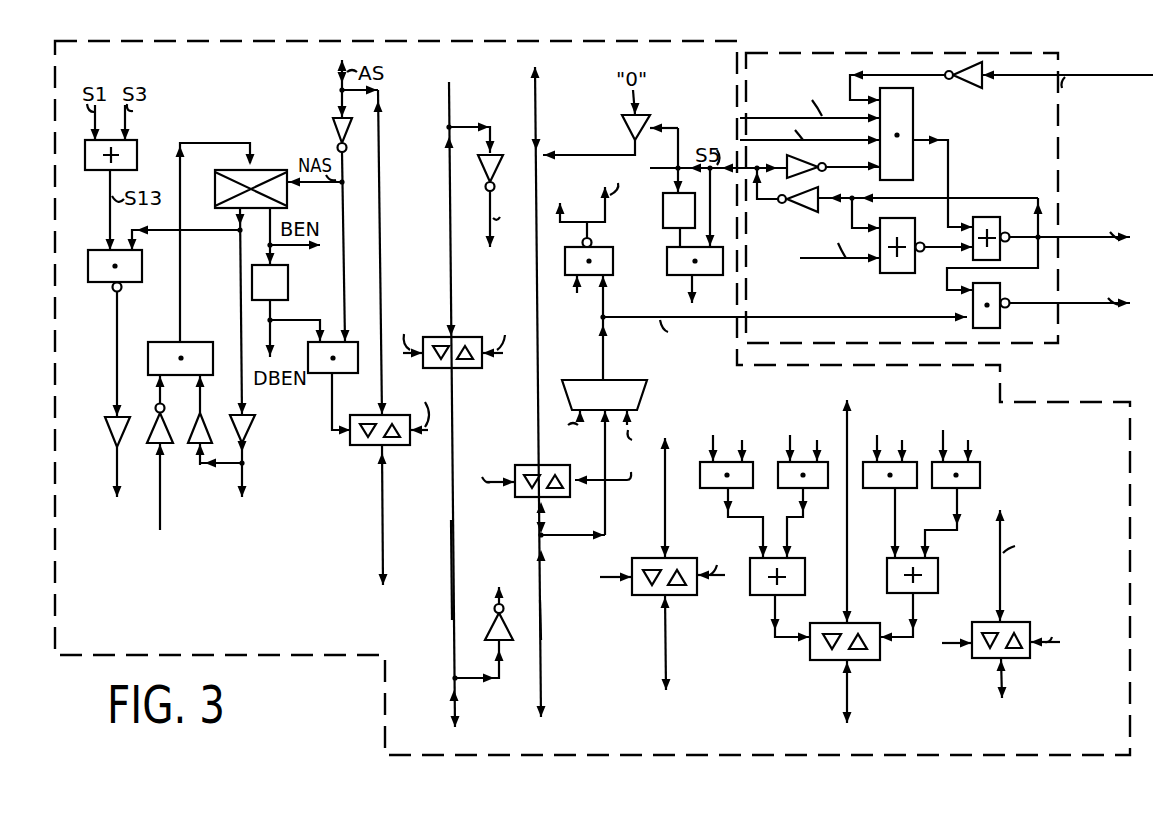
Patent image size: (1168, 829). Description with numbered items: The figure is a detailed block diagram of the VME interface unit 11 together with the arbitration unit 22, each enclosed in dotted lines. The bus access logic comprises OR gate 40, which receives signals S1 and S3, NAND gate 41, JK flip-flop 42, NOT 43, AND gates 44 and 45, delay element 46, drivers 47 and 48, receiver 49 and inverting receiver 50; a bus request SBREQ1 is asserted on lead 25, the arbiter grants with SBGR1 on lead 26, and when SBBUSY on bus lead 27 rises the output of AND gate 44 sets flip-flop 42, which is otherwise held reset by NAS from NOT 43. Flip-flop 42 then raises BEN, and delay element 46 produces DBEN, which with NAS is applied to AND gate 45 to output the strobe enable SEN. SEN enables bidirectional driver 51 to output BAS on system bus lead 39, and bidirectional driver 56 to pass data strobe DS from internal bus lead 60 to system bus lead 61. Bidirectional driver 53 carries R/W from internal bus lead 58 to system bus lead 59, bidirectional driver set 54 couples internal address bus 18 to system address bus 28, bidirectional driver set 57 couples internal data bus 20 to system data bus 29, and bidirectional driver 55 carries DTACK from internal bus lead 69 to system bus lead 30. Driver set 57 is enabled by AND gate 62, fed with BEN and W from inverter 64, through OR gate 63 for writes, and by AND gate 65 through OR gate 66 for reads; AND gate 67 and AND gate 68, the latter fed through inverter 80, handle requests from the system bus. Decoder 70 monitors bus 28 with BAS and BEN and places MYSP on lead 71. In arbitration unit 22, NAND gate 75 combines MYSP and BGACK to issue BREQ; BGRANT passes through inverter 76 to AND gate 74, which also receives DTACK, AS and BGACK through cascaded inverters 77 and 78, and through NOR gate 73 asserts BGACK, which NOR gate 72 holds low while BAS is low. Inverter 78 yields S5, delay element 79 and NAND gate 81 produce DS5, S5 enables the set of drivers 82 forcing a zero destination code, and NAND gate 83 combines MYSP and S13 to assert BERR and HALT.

The VME interface unit 11 is at (636, 41).
The arbitration unit 22 is at (1020, 343).
The internal address bus 18 is at (538, 120).
The internal data bus 20 is at (838, 420).
The lead 25 is at (114, 480).
The lead 26 is at (165, 490).
The bus lead 27 is at (248, 478).
The system address bus 28 is at (545, 607).
The system data bus 29 is at (846, 716).
The system bus lead 30 is at (1008, 680).
The system bus lead 39 is at (378, 562).
The OR gate 40 is at (93, 171).
The NAND gate 41 is at (96, 283).
The JK flip-flop 42 is at (215, 196).
The NOT 43 is at (332, 134).
The AND gate 44 is at (200, 342).
The AND gate 45 is at (316, 375).
The delay element 46 is at (289, 280).
The driver 47 is at (105, 434).
The driver 48 is at (255, 432).
The receiver 49 is at (205, 425).
The inverting receiver 50 is at (155, 412).
The bidirectional driver 51 is at (365, 447).
The bidirectional driver 53 is at (470, 370).
The bidirectional driver set 54 is at (523, 497).
The bidirectional driver 55 is at (973, 660).
The bidirectional driver 56 is at (650, 597).
The bidirectional driver set 57 is at (830, 660).
The internal bus lead 58 is at (446, 110).
The system bus lead 59 is at (452, 568).
The internal bus lead 60 is at (662, 490).
The system bus lead 61 is at (664, 676).
The AND gate 62 is at (703, 490).
The OR gate 63 is at (758, 597).
The inverter 64 is at (480, 178).
The AND gate 65 is at (875, 490).
The OR gate 66 is at (938, 574).
The AND gate 67 is at (810, 490).
The AND gate 68 is at (980, 474).
The internal bus lead 69 is at (1003, 577).
The decoder 70 is at (615, 380).
The lead 71 is at (602, 342).
The NOR gate 72 is at (875, 275).
The NOR gate 73 is at (1006, 212).
The AND gate 74 is at (913, 112).
The NAND gate 75 is at (1001, 318).
The inverter 76 is at (975, 88).
The inverter 77 is at (812, 150).
The inverter 78 is at (796, 214).
The delay element 79 is at (661, 212).
The inverter 80 is at (486, 632).
The NAND gate 81 is at (665, 268).
The set of drivers 82 is at (622, 130).
The NAND gate 83 is at (565, 260).